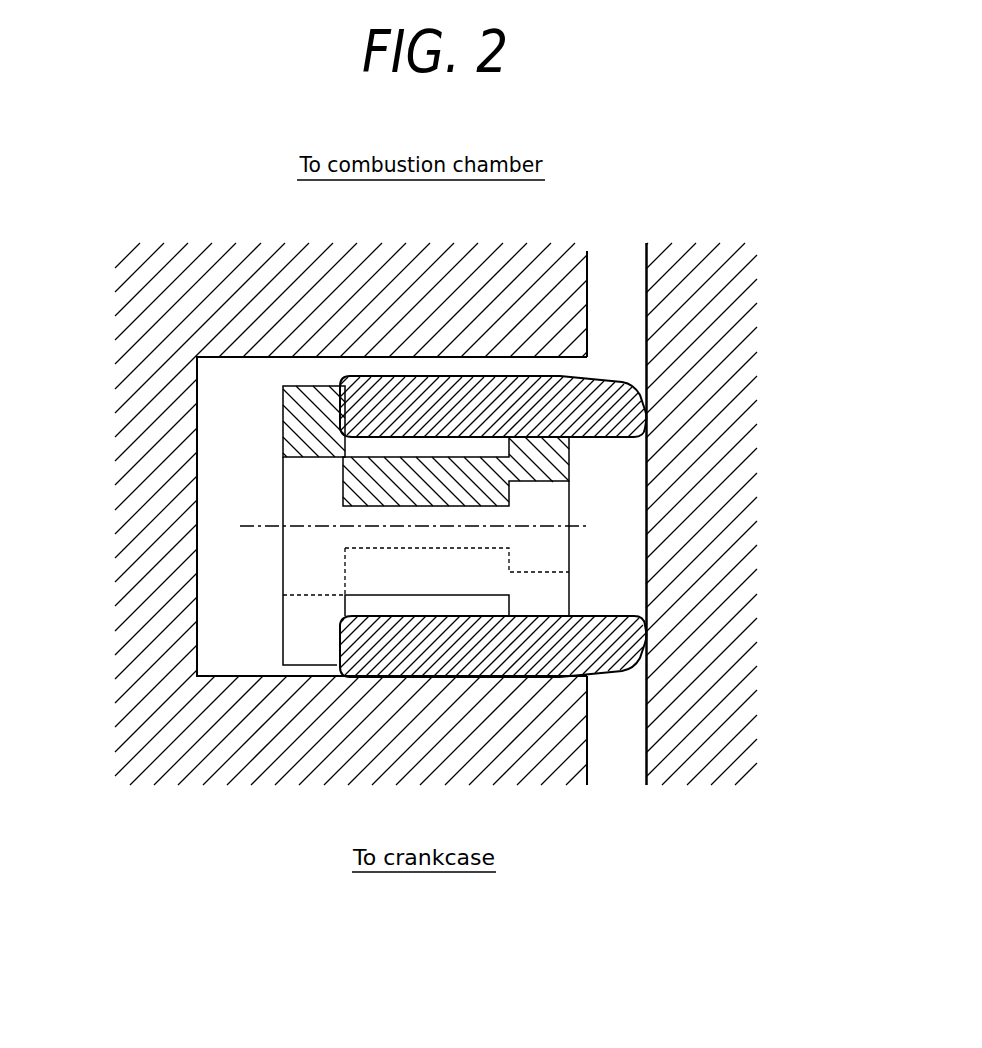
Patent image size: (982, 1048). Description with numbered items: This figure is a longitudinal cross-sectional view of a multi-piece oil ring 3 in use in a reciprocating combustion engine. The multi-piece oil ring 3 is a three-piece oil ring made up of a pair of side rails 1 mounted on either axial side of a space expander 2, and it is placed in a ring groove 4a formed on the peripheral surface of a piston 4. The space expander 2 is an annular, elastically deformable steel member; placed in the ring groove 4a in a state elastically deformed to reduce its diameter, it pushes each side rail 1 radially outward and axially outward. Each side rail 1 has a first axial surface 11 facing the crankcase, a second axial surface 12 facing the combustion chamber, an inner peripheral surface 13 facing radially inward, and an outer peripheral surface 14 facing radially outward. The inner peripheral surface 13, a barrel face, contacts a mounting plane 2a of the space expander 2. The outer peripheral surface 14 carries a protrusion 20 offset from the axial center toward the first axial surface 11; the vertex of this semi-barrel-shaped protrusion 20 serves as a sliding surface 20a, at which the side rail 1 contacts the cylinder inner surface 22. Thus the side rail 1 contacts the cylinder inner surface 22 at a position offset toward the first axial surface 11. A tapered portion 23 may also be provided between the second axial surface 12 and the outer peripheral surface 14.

The side rail 1 is at (515, 378).
The space expander 2 is at (292, 666).
The mounting plane 2a is at (342, 420).
The multi-piece oil ring 3 is at (575, 493).
The piston 4 is at (587, 254).
The ring groove 4a is at (233, 360).
The first axial surface 11 is at (395, 438).
The second axial surface 12 is at (440, 376).
The inner peripheral surface 13 is at (320, 433).
The outer peripheral surface 14 is at (650, 400).
The protrusion 20 is at (645, 408).
The sliding surface 20a is at (648, 418).
The cylinder inner surface 22 is at (643, 286).
The tapered portion 23 is at (611, 380).